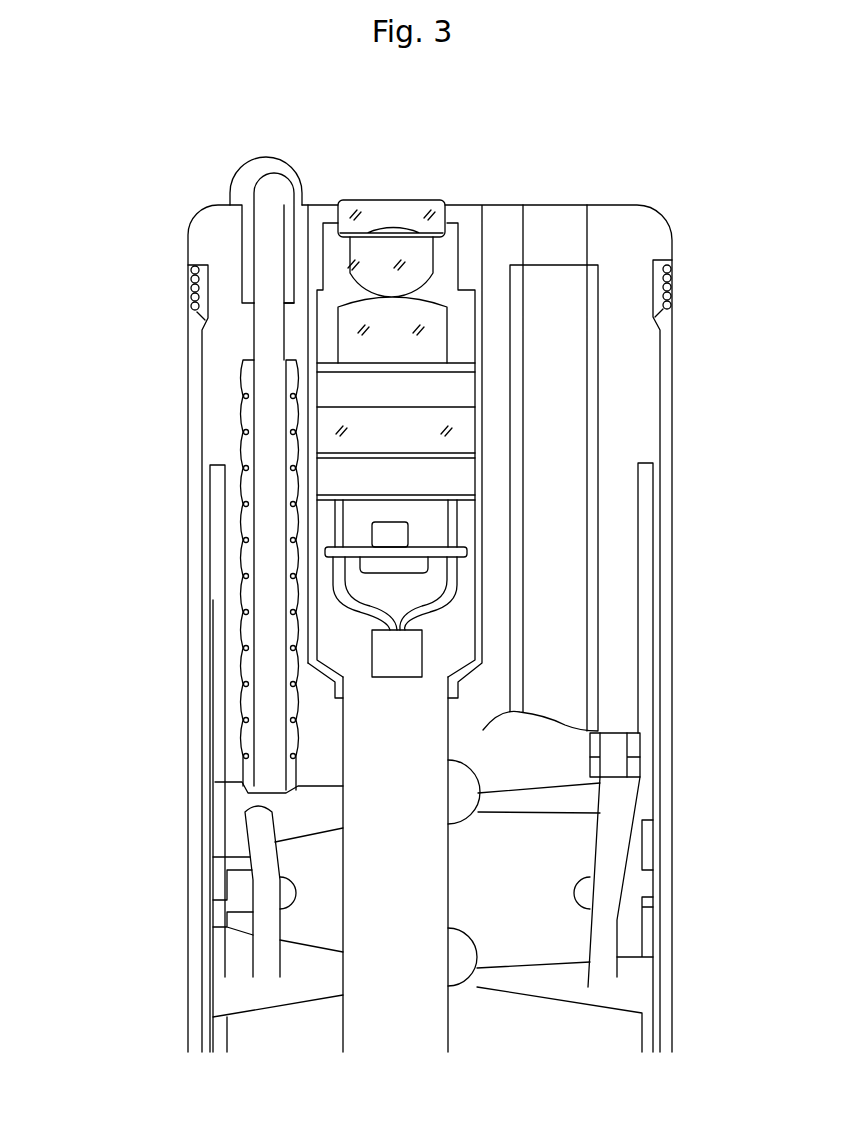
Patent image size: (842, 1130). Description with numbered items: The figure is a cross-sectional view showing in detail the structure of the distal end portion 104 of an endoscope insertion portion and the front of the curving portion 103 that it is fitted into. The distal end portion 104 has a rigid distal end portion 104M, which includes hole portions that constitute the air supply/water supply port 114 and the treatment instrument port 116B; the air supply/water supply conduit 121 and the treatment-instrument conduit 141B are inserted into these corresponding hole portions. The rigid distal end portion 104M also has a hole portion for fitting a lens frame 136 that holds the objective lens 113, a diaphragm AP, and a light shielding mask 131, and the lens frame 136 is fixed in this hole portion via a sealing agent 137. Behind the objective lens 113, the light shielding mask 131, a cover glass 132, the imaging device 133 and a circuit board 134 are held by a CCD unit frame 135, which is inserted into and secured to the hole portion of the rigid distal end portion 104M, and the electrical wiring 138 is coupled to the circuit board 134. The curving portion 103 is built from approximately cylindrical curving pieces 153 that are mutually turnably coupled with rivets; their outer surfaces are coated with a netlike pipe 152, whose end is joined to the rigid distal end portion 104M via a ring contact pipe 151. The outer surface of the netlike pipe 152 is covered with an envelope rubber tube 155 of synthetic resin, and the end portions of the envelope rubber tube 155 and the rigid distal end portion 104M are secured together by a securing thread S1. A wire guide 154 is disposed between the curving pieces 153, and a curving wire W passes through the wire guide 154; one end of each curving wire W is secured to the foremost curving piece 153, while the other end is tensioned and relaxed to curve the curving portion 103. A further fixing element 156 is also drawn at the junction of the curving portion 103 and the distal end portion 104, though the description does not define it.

The rigid distal end portion 104M is at (215, 235).
The air supply/water supply port 114 is at (268, 196).
The diaphragm AP is at (347, 223).
The objective lens 113 is at (417, 312).
The sealing agent 137 is at (462, 213).
The treatment instrument port 116B is at (553, 197).
The securing thread S1 is at (190, 280).
The treatment-instrument conduit 141B is at (580, 288).
The air supply/water supply conduit 121 is at (267, 345).
The lens frame 136 is at (457, 323).
The light shielding mask 131 is at (462, 368).
The cover glass 132 is at (465, 432).
The imaging device (CCD) 133 is at (458, 487).
The circuit board 134 is at (420, 550).
The CCD unit frame 135 is at (305, 468).
The distal end portion 104 is at (60, 275).
The ring contact pipe 151 is at (220, 641).
The netlike pipe 152 is at (205, 699).
The electrical wiring 138 is at (357, 765).
The fixing member 156 is at (645, 743).
The curving piece 153 is at (307, 833).
The curving wire W is at (250, 838).
The wire guide 154 is at (240, 890).
The curving portion 103 is at (60, 790).
The envelope rubber tube 155 is at (200, 973).